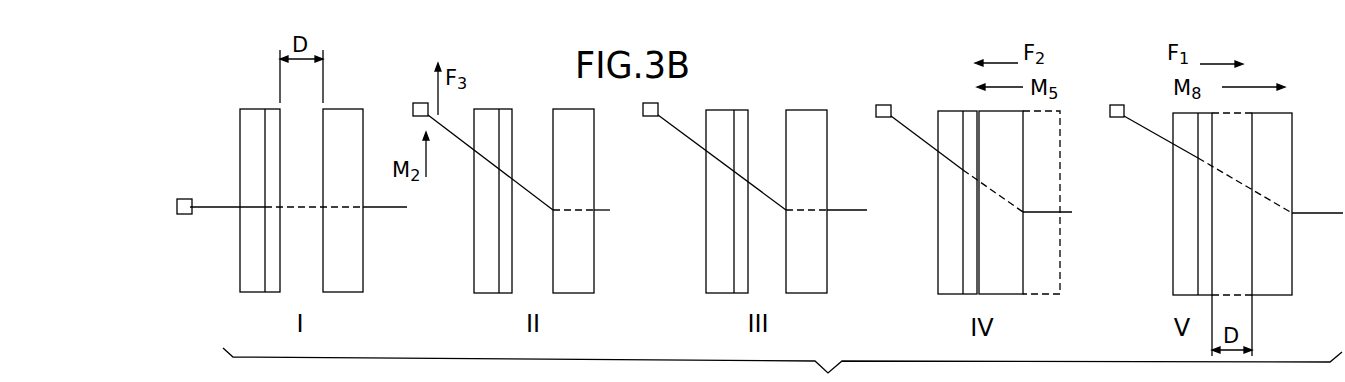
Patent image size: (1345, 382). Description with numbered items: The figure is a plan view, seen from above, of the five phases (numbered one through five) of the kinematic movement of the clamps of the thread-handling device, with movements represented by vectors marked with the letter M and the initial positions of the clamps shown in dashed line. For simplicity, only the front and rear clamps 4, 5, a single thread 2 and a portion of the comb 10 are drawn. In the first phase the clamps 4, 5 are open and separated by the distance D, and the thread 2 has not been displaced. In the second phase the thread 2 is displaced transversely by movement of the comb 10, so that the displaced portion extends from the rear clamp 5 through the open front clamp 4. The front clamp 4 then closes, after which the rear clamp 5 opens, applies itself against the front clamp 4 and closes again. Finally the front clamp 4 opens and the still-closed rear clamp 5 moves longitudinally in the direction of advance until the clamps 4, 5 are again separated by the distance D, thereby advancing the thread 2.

The comb 10 is at (182, 198).
The thread 2 is at (223, 205).
The front clamp 4 is at (247, 262).
The rear clamp 5 is at (360, 267).